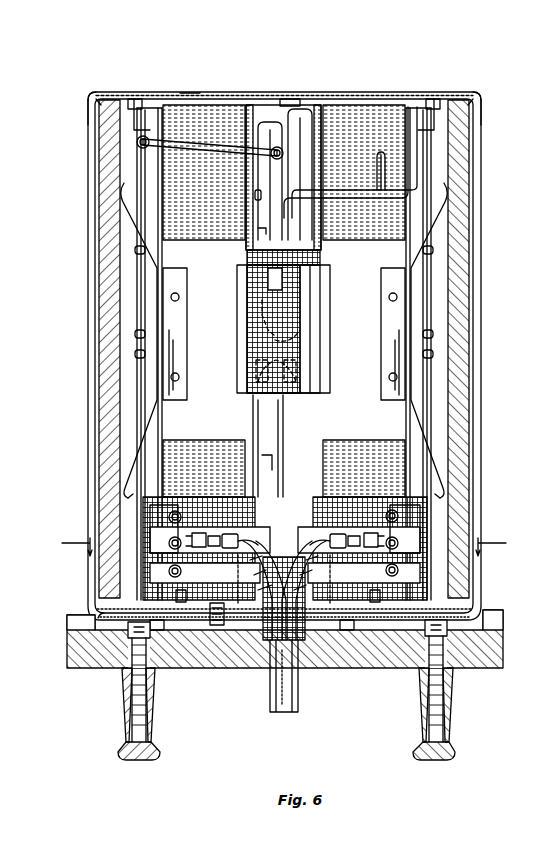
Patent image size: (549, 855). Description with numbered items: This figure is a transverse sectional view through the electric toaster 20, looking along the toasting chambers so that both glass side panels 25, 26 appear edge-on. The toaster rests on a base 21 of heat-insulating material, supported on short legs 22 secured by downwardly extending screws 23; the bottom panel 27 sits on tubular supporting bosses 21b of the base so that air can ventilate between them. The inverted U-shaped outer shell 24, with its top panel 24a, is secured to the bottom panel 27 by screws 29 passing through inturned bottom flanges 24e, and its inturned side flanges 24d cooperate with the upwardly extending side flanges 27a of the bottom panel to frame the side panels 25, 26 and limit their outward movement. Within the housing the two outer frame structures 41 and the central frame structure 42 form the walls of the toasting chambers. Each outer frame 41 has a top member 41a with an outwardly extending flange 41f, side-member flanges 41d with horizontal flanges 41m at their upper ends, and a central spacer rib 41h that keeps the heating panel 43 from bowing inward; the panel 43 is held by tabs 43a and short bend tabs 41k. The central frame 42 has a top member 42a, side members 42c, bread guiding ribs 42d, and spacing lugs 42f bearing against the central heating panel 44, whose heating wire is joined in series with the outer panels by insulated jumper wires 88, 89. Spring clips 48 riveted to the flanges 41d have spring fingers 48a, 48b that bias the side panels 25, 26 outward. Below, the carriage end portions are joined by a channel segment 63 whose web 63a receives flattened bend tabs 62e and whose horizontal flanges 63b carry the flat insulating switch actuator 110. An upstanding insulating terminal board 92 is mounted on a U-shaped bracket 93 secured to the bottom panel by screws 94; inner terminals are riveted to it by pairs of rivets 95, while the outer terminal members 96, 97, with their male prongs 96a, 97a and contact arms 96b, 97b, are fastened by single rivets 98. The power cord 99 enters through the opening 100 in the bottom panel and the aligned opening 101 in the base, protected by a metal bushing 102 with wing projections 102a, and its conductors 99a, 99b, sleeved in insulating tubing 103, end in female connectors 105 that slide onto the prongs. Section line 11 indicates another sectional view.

The section line 11 is at (280, 536).
The electric toaster 20 is at (186, 757).
The base 21 is at (504, 645).
The tubular supporting boss 21b is at (80, 632).
The leg 22 is at (138, 761).
The screw 23 is at (130, 700).
The outer shell 24 is at (178, 90).
The top panel 24a is at (182, 93).
The inturned side flange 24d is at (90, 108).
The bottom flange 24e is at (112, 618).
The side panel 25 is at (100, 345).
The side panel 26 is at (468, 350).
The bottom panel 27 is at (95, 618).
The side flange 27a is at (97, 608).
The screw 29 is at (160, 632).
The heating panel supporting frame structure 41 is at (148, 126).
The top member 41a is at (140, 98).
The inwardly extending flange 41d is at (210, 105).
The outwardly extending flange 41f is at (100, 100).
The spacer rib 41h is at (158, 174).
The bend tab 41k is at (89, 99).
The horizontal flange 41m is at (190, 110).
The central heating panel support frame structure 42 is at (252, 176).
The top member 42a is at (287, 98).
The side member 42c is at (306, 105).
The bread guiding rib 42d is at (257, 192).
The spacing lug 42f is at (256, 196).
The heating panel 43 is at (136, 290).
The tab 43a is at (133, 100).
The central heating panel 44 is at (258, 228).
The spring clip 48 is at (185, 315).
The spring finger 48a is at (130, 210).
The spring finger 48b is at (135, 465).
The bend tab 62e is at (300, 305).
The channel segment 63 is at (321, 290).
The web 63a is at (322, 338).
The horizontal flange 63b is at (322, 264).
The jumper wire 88 is at (208, 147).
The jumper wire 89 is at (345, 190).
The terminal board 92 is at (150, 500).
The U-shaped bracket 93 is at (428, 500).
The screw 94 is at (182, 590).
The rivet 95 is at (174, 510).
The terminal member 96 is at (150, 530).
The male prong 96a is at (190, 536).
The contact arm 96b is at (250, 538).
The terminal member 97 is at (420, 525).
The male prong 97a is at (380, 536).
The contact arm 97b is at (318, 538).
The rivet 98 is at (199, 532).
The electrical power cord 99 is at (282, 713).
The conductor 99a is at (232, 534).
The conductor 99b is at (338, 534).
The opening 100 is at (306, 576).
The opening 101 is at (218, 626).
The metal bushing 102 is at (296, 640).
The wing projection 102a is at (240, 590).
The insulating tubing 103 is at (266, 640).
The female end connector 105 is at (214, 535).
The switch actuator 110 is at (252, 322).